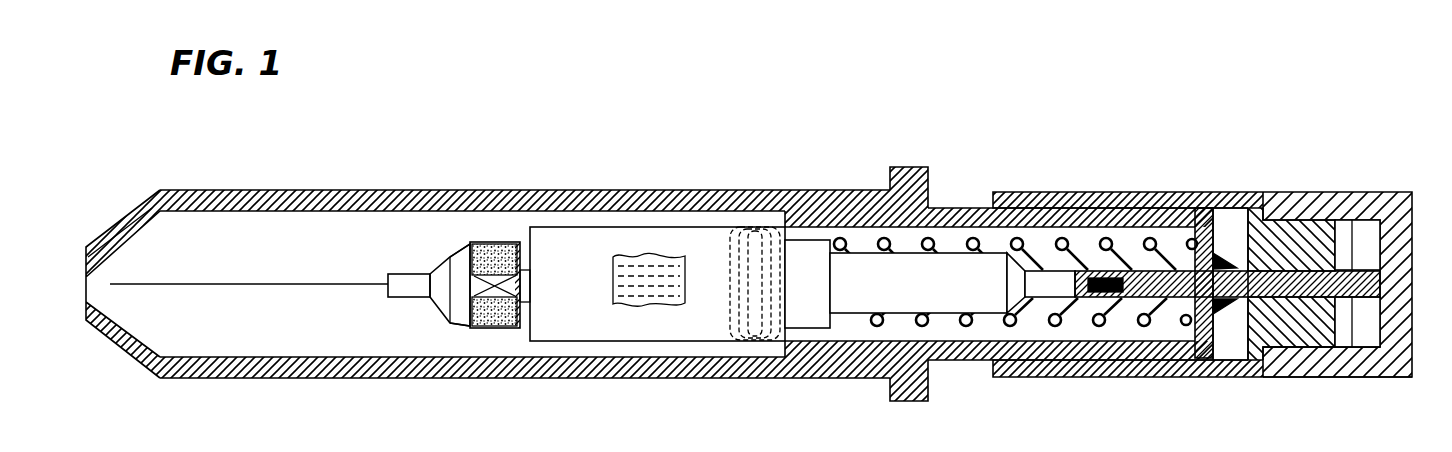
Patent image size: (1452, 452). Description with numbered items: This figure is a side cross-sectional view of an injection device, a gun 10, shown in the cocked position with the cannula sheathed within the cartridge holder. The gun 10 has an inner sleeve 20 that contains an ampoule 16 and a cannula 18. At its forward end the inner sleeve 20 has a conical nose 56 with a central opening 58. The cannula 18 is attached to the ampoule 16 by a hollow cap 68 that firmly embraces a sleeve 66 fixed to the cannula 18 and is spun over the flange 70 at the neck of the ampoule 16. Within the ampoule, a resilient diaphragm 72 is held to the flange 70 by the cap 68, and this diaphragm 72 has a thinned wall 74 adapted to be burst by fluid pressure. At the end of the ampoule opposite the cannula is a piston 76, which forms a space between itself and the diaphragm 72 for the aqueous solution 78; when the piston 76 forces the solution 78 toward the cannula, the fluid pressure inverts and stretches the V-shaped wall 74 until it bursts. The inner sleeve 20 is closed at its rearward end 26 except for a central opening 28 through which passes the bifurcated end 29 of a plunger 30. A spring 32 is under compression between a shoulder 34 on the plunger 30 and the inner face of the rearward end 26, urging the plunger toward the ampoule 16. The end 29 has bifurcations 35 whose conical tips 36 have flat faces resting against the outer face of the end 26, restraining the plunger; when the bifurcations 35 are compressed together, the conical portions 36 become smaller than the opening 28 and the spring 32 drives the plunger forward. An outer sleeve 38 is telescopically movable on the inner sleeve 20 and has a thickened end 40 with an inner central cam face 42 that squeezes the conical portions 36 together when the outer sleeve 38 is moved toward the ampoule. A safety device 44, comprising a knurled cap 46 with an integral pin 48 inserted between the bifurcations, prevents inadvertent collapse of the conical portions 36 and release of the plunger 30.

The gun 10 is at (665, 190).
The ampoule 16 is at (690, 342).
The cannula 18 is at (230, 284).
The inner sleeve 20 is at (967, 207).
The rearward end 26 is at (1219, 325).
The central opening 28 is at (1222, 266).
The bifurcated end 29 is at (1077, 252).
The plunger 30 is at (1034, 290).
The spring 32 is at (1150, 350).
The shoulder 34 is at (856, 378).
The bifurcations 35 is at (1204, 314).
The conical tips 36 is at (1222, 318).
The outer sleeve 38 is at (1013, 378).
The thickened end 40 is at (1312, 230).
The cam face 42 is at (1265, 260).
The safety device 44 is at (1377, 377).
The cap 46 is at (1383, 192).
The pin 48 is at (1128, 271).
The conical nose 56 is at (152, 201).
The central opening 58 is at (113, 232).
The sleeve 66 is at (439, 295).
The hollow cap 68 is at (462, 268).
The flange 70 is at (500, 327).
The resilient diaphragm 72 is at (478, 320).
The thinned wall 74 is at (517, 273).
The piston 76 is at (733, 258).
The aqueous solution 78 is at (616, 305).